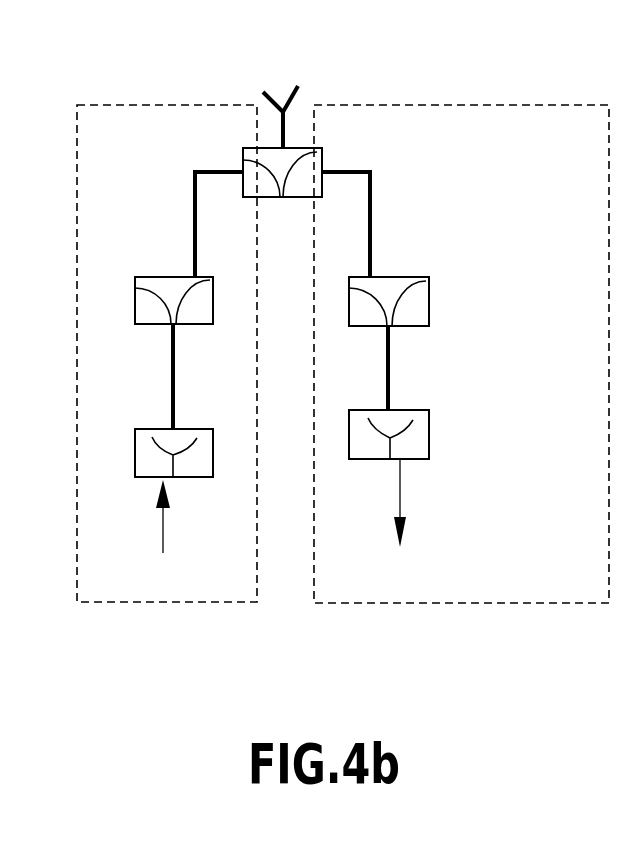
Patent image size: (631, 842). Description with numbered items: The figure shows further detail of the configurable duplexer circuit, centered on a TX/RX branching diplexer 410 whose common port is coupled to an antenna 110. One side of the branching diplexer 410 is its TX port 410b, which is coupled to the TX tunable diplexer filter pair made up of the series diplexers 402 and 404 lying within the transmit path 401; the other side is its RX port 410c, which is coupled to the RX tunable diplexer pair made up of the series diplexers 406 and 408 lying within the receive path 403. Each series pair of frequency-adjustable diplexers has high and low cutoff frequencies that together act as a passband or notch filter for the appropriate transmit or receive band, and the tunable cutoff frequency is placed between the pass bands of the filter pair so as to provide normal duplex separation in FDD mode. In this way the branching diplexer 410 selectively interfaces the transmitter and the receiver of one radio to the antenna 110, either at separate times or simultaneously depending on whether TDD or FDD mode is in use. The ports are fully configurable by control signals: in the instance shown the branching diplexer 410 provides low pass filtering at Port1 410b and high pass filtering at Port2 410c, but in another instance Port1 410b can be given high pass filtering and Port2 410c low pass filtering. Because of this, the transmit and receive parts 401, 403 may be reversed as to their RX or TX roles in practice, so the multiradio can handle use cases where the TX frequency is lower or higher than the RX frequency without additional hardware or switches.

The antenna 110 is at (298, 88).
The transmit path 401 is at (208, 602).
The diplexer 402 is at (135, 447).
The receive path 403 is at (397, 603).
The diplexer 404 is at (135, 298).
The diplexer 406 is at (429, 428).
The diplexer 408 is at (428, 278).
The branching diplexer 410 is at (293, 197).
The TX port 410b is at (243, 172).
The RX port 410c is at (323, 171).